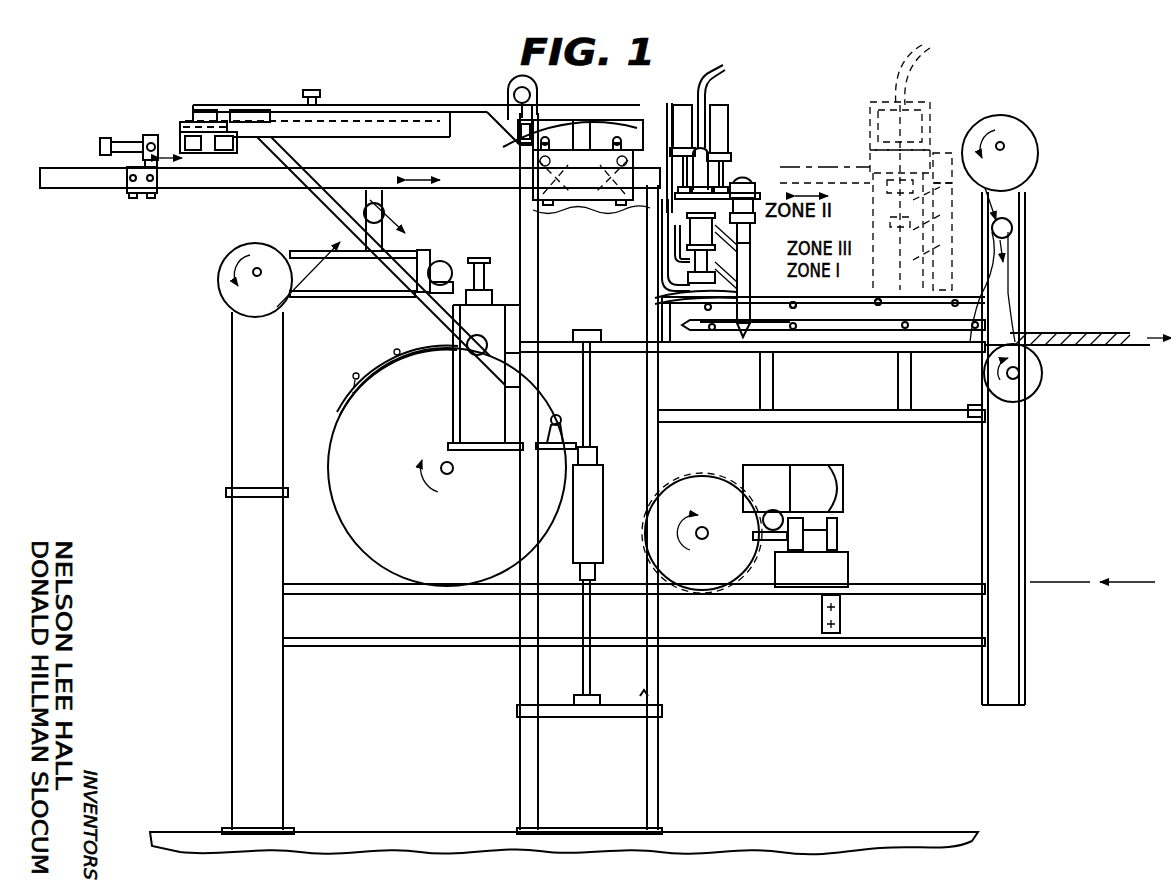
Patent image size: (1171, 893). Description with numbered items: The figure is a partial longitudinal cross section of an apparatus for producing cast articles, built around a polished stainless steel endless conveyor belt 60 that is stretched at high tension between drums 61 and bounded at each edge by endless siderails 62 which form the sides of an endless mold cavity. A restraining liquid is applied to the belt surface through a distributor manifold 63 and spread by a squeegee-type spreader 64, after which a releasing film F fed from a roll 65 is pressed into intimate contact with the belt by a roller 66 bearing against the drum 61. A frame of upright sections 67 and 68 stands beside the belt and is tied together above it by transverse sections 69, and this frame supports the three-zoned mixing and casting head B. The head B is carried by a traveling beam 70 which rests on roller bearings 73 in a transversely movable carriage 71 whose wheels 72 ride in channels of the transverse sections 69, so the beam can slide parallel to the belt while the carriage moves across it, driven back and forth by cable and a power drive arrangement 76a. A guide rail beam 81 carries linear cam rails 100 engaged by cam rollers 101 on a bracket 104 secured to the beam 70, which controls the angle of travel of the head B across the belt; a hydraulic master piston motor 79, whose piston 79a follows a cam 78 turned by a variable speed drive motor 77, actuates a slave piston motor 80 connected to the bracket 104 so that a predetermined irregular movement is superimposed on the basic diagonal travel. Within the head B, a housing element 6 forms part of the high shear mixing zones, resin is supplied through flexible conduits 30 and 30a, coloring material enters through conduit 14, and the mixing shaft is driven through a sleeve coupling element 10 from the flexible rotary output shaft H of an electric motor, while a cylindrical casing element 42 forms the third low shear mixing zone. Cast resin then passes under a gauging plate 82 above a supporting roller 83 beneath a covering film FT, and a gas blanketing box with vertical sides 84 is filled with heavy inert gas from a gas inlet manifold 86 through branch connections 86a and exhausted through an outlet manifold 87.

The composite housing element 6 is at (718, 228).
The sleeve coupling element 10 is at (712, 172).
The conduit 14 is at (662, 262).
The flexible conduit 30 is at (750, 280).
The flexible conduit 30a is at (655, 298).
The cylindrical casing element 42 is at (752, 235).
The endless conveyor belt 60 is at (1131, 340).
The drum 61 is at (459, 518).
The endless siderails 62 is at (432, 356).
The distributor manifold 63 is at (351, 372).
The squeegee-type spreader 64 is at (397, 349).
The roll 65 is at (267, 310).
The roller 66 is at (482, 337).
The upright section 67 is at (660, 680).
The upright section 68 is at (520, 684).
The transverse sections 69 is at (530, 122).
The traveling beam 70 is at (200, 189).
The transversely movable carriage 71 is at (596, 187).
The wheels 72 is at (530, 138).
The roller bearings 73 is at (580, 215).
The power drive arrangement 76a is at (497, 407).
The variable speed drive motor 77 is at (845, 486).
The cam 78 is at (714, 575).
The hydraulic master piston motor 79 is at (828, 535).
The piston 79a is at (811, 592).
The slave piston motor 80 is at (228, 146).
The guide rail beam 81 is at (402, 135).
The gauging plate 82 is at (1096, 335).
The roller 83 is at (1046, 386).
The vertical sides 84 is at (846, 318).
The gas inlet manifold 86 is at (878, 332).
The branch connections 86a is at (790, 330).
The outlet manifold 87 is at (876, 300).
The linear cam rails 100 is at (217, 124).
The cam rollers 101 is at (208, 143).
The bracket 104 is at (145, 135).
The flexible rotary output shaft H is at (718, 80).
The mixing and casting head device B is at (754, 170).
The releasing film F is at (336, 248).
The covering film FT is at (1026, 246).